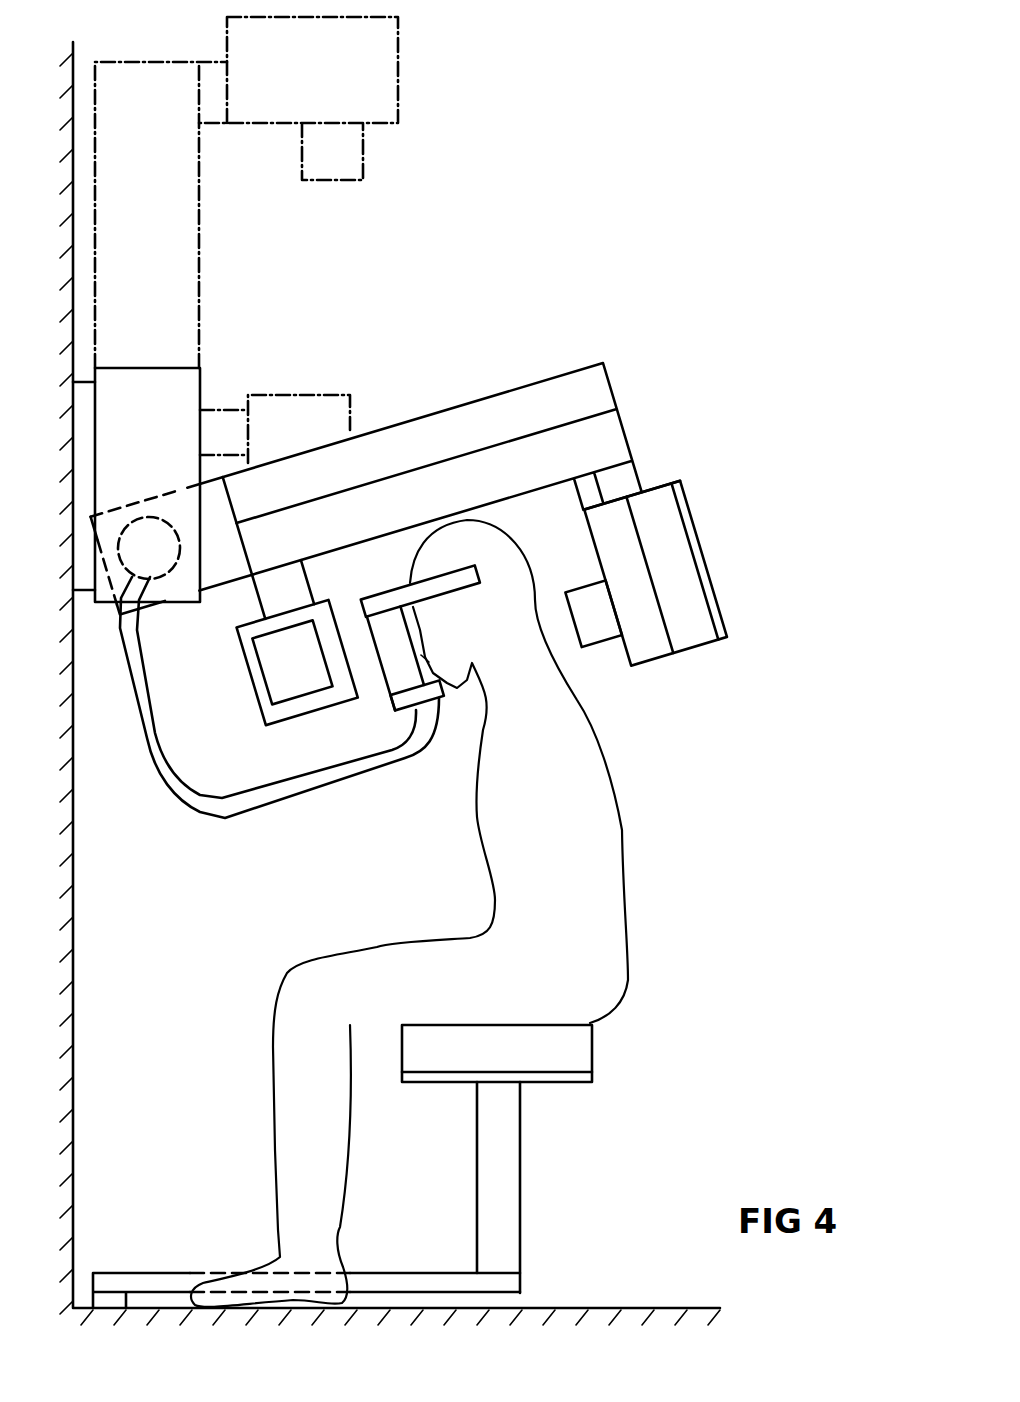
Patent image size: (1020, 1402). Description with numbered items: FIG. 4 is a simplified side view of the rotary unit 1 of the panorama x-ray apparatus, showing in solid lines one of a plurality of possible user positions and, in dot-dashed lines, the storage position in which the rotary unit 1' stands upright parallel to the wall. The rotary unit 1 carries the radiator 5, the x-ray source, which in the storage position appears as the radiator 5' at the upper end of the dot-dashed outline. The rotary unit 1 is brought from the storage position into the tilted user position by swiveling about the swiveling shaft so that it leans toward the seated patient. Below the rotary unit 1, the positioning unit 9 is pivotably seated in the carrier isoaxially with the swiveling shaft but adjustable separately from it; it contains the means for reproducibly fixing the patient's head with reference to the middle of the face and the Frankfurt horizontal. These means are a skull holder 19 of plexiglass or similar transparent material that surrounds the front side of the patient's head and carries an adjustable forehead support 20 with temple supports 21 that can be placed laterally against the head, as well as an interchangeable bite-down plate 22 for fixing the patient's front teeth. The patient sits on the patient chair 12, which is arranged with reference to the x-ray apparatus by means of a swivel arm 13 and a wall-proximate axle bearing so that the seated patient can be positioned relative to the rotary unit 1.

The rotary unit 1 is at (386, 474).
The rotary unit in storage position 1' is at (198, 215).
The radiator 5 is at (636, 579).
The radiator in storage position 5' is at (320, 240).
The positioning unit 9 is at (242, 808).
The patient chair 12 is at (575, 1047).
The swivel arm 13 is at (387, 1283).
The skull holder 19 is at (388, 652).
The forehead support 20 is at (410, 585).
The temple supports 21 is at (457, 580).
The bite-down plate 22 is at (441, 645).